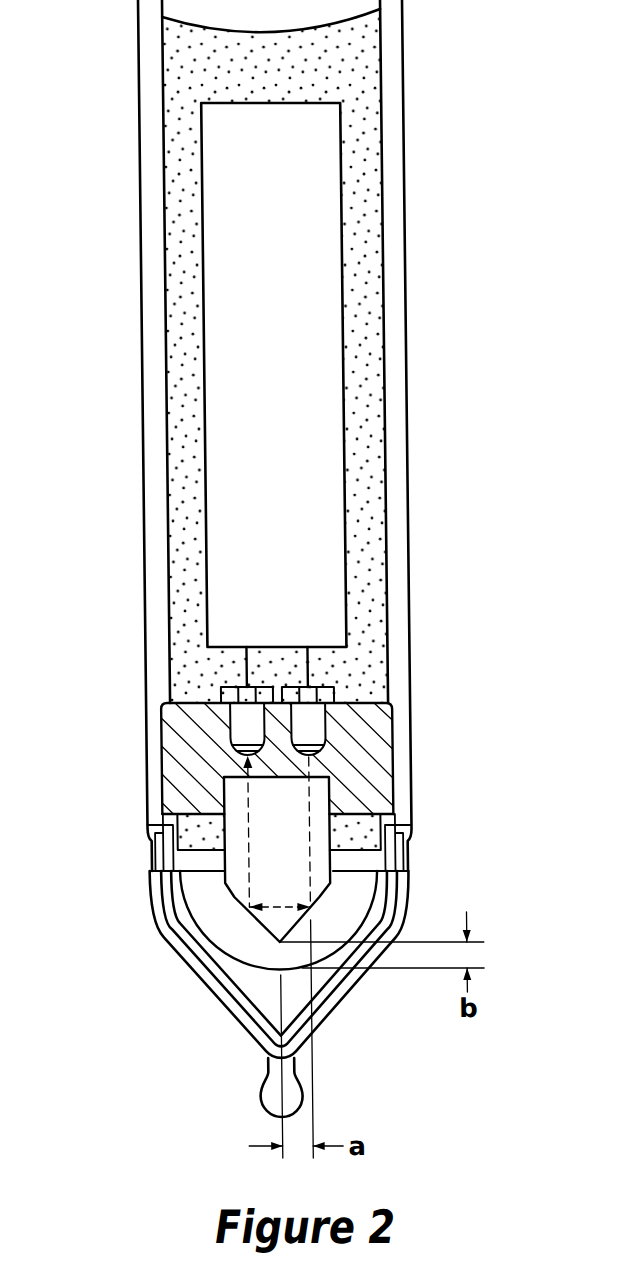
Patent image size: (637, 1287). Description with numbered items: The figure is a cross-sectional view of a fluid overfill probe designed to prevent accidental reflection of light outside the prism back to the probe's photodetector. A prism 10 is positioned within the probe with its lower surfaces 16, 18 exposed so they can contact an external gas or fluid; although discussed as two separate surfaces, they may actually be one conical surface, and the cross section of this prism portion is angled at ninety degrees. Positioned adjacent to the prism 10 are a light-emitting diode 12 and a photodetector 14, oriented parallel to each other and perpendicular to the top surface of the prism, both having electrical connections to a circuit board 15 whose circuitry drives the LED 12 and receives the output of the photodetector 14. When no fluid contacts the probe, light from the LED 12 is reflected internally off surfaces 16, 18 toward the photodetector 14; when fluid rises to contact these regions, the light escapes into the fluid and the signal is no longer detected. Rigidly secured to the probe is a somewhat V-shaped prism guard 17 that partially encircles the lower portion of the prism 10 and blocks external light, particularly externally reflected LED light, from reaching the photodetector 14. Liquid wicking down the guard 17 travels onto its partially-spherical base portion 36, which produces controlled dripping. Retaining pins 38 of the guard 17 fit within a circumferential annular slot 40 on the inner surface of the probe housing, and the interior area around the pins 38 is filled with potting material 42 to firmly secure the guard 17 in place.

The prism 10 is at (310, 797).
The light-emitting diode 12 is at (313, 728).
The photodetector 14 is at (226, 728).
The circuit board 15 is at (260, 319).
The lower surface of prism 16 is at (302, 905).
The prism guard 17 is at (345, 992).
The lower surface of prism 18 is at (237, 906).
The partially-spherical base portion 36 is at (257, 1082).
The retaining pins 38 is at (140, 827).
The annular slot 40 is at (150, 838).
The potting material 42 is at (192, 848).